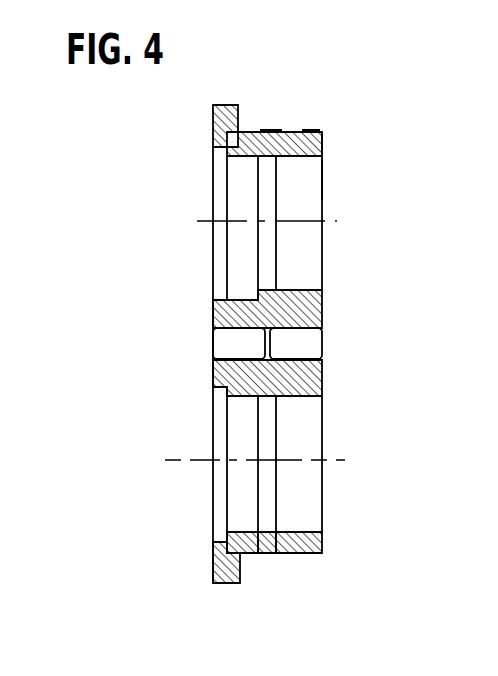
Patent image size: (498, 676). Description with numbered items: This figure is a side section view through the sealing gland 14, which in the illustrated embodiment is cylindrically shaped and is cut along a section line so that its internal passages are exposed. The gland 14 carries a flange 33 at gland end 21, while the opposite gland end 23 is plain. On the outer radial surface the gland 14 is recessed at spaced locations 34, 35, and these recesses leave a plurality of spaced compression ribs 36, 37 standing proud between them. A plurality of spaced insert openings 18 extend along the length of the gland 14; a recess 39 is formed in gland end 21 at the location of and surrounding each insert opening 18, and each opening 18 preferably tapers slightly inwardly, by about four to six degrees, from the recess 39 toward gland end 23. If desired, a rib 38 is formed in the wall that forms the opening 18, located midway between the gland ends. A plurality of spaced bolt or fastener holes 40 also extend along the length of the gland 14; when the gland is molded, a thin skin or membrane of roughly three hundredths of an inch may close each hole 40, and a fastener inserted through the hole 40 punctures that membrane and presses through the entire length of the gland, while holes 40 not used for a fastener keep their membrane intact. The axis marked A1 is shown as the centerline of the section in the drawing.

The gland 14 is at (250, 131).
The insert opening 18 is at (312, 158).
The gland end 21 is at (212, 126).
The gland end 23 is at (323, 175).
The flange 33 is at (213, 556).
The recessed location 34 is at (256, 554).
The recessed location 35 is at (292, 554).
The compression rib 36 is at (273, 130).
The compression rib 37 is at (310, 130).
The rib 38 is at (265, 529).
The recess 39 is at (212, 283).
The bolt hole 40 is at (212, 333).
The axis A1 is at (240, 348).